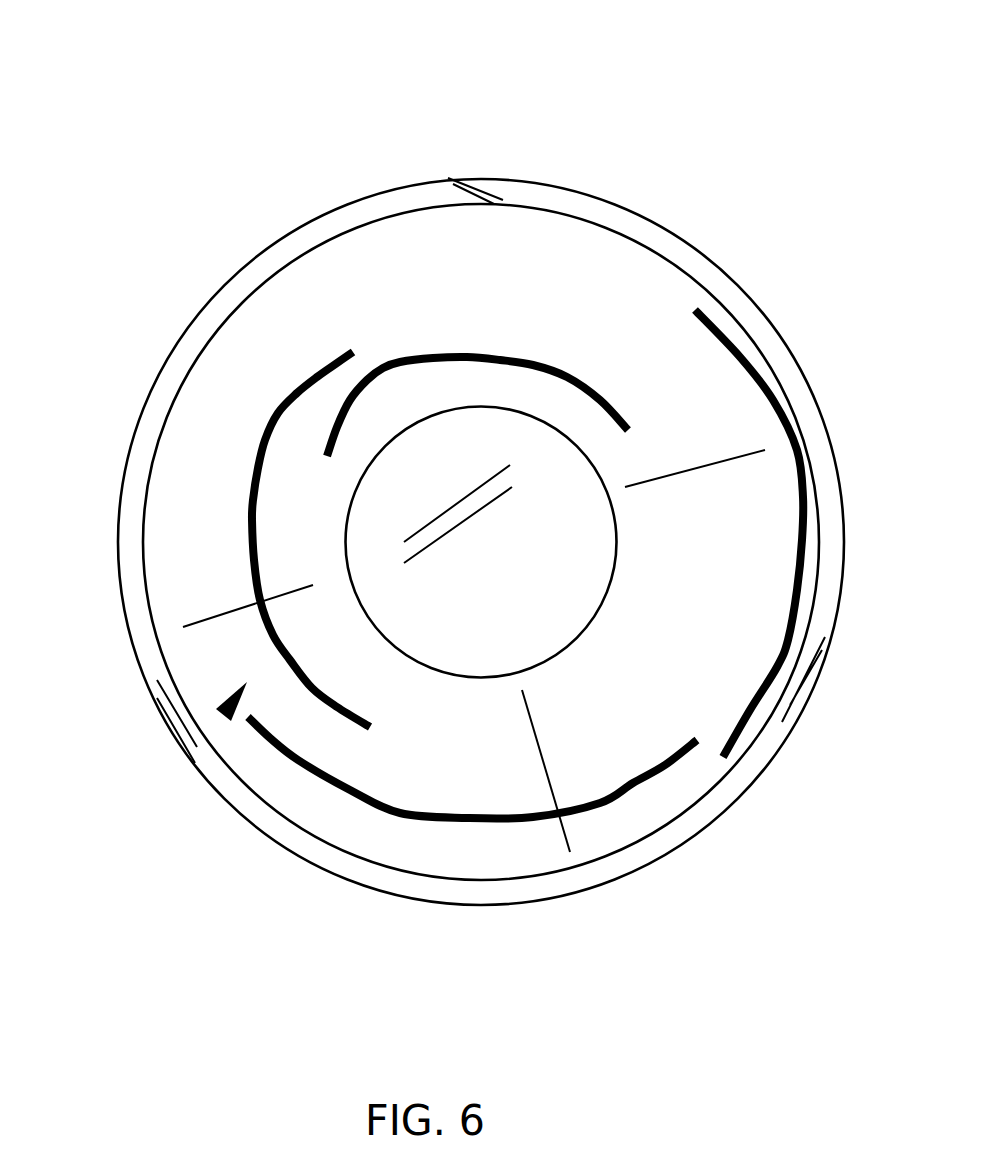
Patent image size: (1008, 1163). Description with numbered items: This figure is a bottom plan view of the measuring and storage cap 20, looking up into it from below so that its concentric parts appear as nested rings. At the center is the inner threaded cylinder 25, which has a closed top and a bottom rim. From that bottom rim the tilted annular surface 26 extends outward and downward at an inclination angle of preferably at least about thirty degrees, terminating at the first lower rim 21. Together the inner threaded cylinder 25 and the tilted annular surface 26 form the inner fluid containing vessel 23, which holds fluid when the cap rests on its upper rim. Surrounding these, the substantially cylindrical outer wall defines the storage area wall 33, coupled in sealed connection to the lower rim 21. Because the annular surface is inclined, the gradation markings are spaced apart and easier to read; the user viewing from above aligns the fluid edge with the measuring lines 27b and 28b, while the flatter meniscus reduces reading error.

The cap 20 is at (645, 178).
The first lower rim 21 is at (410, 392).
The inner fluid containing vessel 23 is at (222, 714).
The inner threaded cylinder 25 is at (527, 512).
The tilted annular surface 26 is at (603, 655).
The measuring lines 27b is at (500, 345).
The measuring lines 28b is at (487, 823).
The storage area wall 33 is at (633, 820).